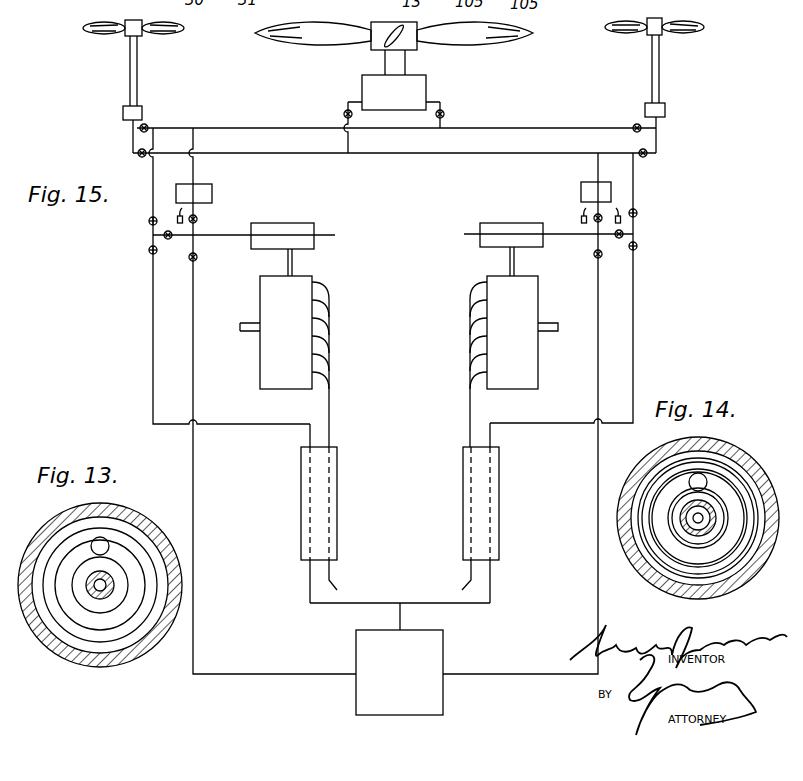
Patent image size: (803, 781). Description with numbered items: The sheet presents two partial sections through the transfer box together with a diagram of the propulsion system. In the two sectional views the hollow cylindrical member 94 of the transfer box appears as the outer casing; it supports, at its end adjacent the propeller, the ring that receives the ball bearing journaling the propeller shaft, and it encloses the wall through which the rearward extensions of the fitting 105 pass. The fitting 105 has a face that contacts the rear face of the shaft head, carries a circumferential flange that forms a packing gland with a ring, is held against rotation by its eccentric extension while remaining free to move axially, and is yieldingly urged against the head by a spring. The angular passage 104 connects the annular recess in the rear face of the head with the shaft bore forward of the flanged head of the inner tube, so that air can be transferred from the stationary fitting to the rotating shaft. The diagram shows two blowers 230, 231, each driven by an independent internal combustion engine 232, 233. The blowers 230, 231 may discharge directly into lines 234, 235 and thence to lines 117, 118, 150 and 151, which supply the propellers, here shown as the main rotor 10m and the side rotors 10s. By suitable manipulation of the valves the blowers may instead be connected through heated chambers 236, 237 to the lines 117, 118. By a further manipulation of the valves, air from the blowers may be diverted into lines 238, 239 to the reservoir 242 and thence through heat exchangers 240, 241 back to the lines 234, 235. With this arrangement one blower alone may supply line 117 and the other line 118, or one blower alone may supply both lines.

In FIG. 15, the side rotor 10s is at (692, 45).
In FIG. 15, the main rotor 10m is at (470, 40).
In FIG. 15, the line 150 is at (446, 124).
In FIG. 15, the line 151 is at (355, 143).
In FIG. 15, the line 118 is at (245, 128).
In FIG. 15, the line 117 is at (263, 155).
In FIG. 15, the line 234 is at (153, 279).
In FIG. 15, the line 235 is at (636, 278).
In FIG. 15, the line 238 is at (195, 380).
In FIG. 15, the line 239 is at (636, 350).
In FIG. 15, the heated chamber 236 is at (188, 192).
In FIG. 15, the heated chamber 237 is at (603, 193).
In FIG. 15, the blower 230 is at (282, 232).
In FIG. 15, the blower 231 is at (512, 232).
In FIG. 15, the internal combustion engine 232 is at (284, 348).
In FIG. 15, the internal combustion engine 233 is at (514, 347).
In FIG. 15, the heat exchanger 240 is at (340, 509).
In FIG. 15, the heat exchanger 241 is at (500, 512).
In FIG. 15, the reservoir 242 is at (400, 659).
In FIG. 13, the hollow cylindrical member 94 is at (150, 531).
In FIG. 14, the hollow cylindrical member 94 is at (745, 463).
In FIG. 13, the angular passage 104 is at (92, 540).
In FIG. 13, the fitting 105 is at (78, 612).